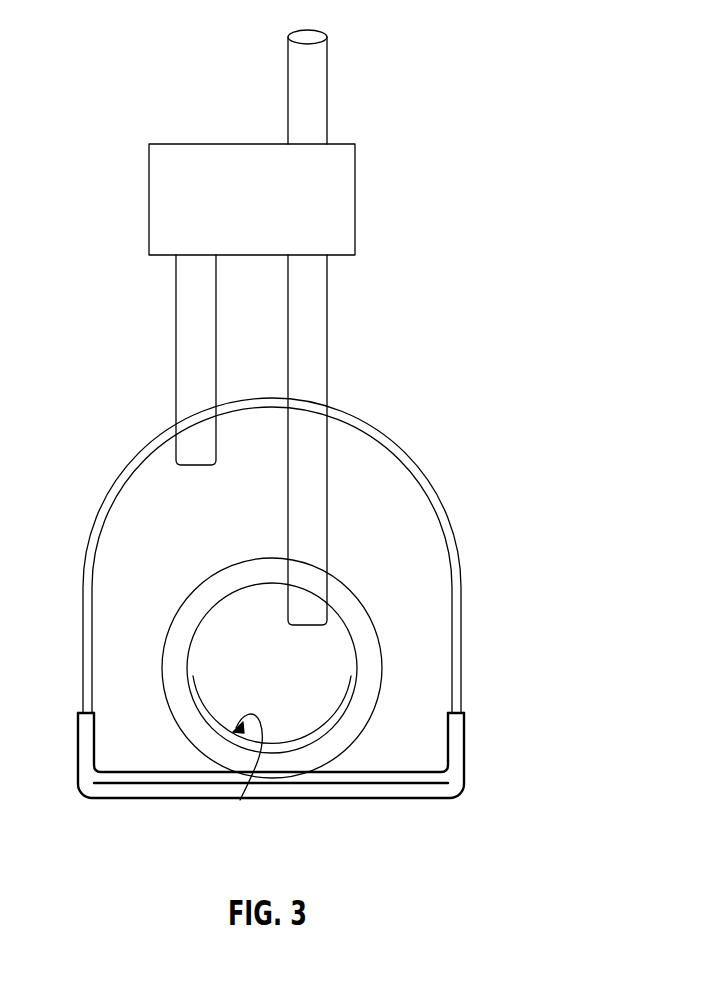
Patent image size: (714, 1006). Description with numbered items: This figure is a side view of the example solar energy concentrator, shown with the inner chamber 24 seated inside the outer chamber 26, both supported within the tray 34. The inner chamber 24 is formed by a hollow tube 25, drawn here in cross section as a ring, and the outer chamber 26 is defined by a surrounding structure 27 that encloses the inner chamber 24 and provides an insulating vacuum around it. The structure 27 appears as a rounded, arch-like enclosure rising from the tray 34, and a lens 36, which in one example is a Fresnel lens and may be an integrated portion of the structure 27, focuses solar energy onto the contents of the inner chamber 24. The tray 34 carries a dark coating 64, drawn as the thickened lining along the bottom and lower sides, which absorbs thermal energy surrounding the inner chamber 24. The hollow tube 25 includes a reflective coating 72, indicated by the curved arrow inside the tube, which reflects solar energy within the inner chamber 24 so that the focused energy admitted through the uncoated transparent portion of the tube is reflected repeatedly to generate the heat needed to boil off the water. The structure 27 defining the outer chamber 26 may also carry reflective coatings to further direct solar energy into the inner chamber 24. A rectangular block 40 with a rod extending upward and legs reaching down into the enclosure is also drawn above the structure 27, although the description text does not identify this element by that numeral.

The clamp block 40 is at (338, 200).
The lens 36 is at (102, 500).
The structure 27 is at (145, 453).
The dark coating 64 is at (126, 798).
The tray 34 is at (447, 787).
The hollow tube 25 is at (362, 628).
The outer chamber 26 is at (408, 665).
The inner chamber 24 is at (252, 676).
The reflective coating 72 is at (240, 800).